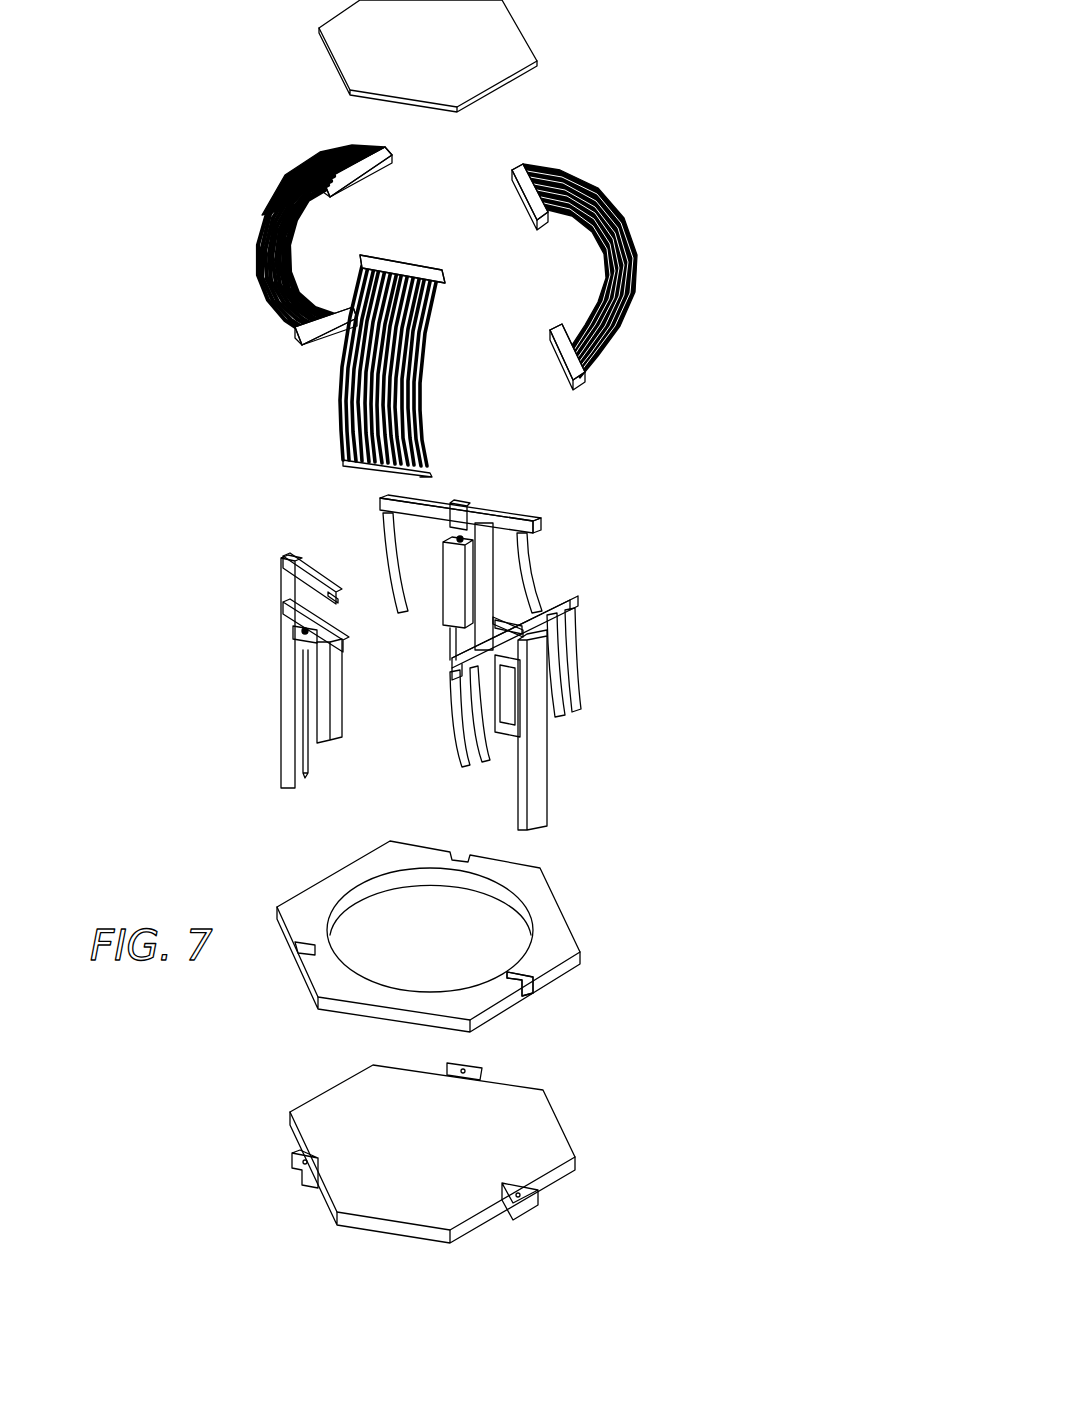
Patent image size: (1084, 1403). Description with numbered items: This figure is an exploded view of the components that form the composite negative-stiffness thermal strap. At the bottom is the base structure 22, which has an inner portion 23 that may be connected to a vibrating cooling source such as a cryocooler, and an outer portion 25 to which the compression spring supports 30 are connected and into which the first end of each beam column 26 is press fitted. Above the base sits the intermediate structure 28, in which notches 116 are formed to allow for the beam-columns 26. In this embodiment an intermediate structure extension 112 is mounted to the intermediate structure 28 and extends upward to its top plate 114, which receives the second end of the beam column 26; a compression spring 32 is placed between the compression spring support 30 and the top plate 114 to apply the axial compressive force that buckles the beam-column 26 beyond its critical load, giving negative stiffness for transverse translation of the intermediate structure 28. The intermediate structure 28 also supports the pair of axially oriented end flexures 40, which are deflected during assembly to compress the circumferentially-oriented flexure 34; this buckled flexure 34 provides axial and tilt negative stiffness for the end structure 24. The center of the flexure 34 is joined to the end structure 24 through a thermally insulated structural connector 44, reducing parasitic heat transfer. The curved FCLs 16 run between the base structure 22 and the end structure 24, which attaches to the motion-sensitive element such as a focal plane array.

The end structure 24 is at (428, 56).
The FCL 16 is at (262, 213).
The circumferentially-oriented flexure 34 is at (493, 518).
The thermally insulated structural connector 44 is at (336, 596).
The axially oriented end flexure 40 is at (383, 520).
The compression spring 32 is at (456, 540).
The intermediate structure extension 112 is at (455, 600).
The top plate 114 is at (300, 632).
The beam column 26 is at (303, 735).
The compression spring support 30 is at (290, 778).
The intermediate structure 28 is at (538, 900).
The notch 116 is at (525, 995).
The inner portion 23 is at (340, 1100).
The base structure 22 is at (474, 1153).
The outer portion 25 is at (292, 1172).